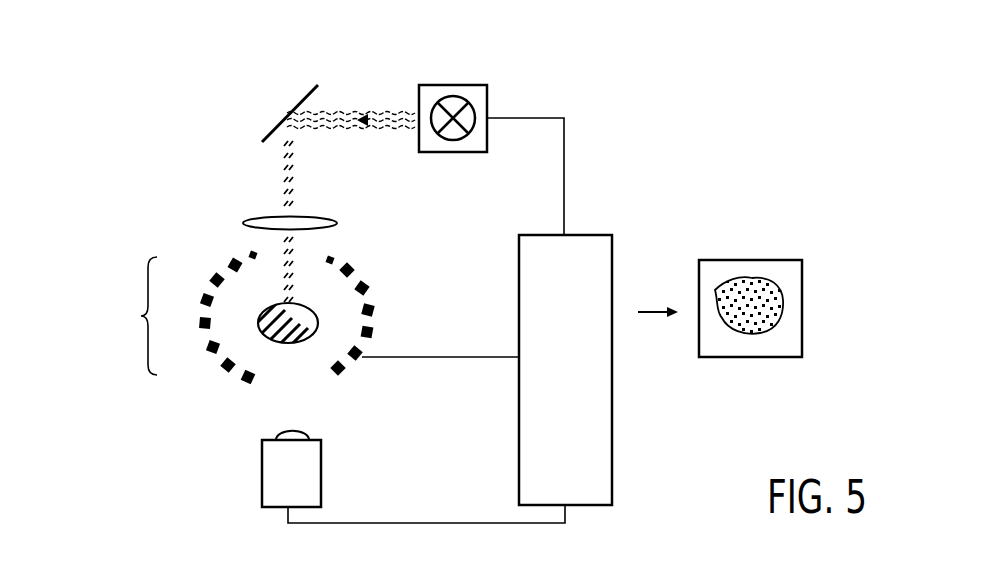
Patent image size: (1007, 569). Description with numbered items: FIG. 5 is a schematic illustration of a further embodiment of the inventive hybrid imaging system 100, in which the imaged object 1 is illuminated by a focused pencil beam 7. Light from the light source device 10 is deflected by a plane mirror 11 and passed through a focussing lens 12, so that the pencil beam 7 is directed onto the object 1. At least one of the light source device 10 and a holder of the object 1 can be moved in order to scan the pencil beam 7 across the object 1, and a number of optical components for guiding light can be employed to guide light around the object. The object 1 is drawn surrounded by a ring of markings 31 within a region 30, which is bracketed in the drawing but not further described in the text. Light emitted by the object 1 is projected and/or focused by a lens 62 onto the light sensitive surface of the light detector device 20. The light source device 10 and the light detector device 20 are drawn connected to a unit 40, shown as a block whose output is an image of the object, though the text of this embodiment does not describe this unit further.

The hybrid imaging system 100 is at (177, 128).
The light source device 10 is at (450, 92).
The plane mirror 11 is at (300, 93).
The focussing lens 12 is at (262, 222).
The dotted ring / sample holder 31 is at (237, 263).
The sample region 30 is at (130, 316).
The pencil beam 7 is at (288, 262).
The imaged object 1 is at (316, 333).
The processing unit 40 is at (565, 370).
The light detector device 20 is at (305, 487).
The lens 62 is at (283, 435).